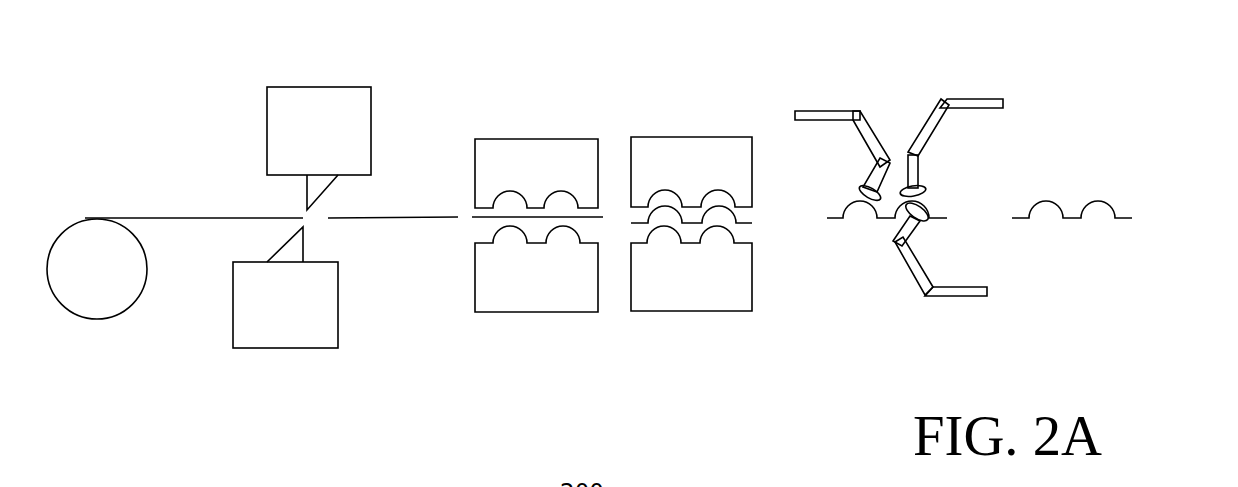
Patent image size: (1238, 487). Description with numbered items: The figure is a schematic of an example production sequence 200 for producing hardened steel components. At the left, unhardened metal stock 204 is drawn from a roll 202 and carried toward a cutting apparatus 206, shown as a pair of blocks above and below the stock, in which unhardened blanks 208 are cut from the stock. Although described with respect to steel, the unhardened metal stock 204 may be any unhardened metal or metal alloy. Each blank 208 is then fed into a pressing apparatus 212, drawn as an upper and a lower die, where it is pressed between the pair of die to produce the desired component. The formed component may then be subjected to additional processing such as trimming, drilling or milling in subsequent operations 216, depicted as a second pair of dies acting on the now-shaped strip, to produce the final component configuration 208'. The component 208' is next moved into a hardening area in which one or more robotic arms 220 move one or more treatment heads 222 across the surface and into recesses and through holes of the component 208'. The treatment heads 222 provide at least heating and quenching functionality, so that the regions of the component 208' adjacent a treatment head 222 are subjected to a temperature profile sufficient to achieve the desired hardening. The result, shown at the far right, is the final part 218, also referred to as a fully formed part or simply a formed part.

The production sequence 200 is at (125, 66).
The roll 202 is at (102, 318).
The unhardened metal stock 204 is at (203, 218).
The cutting apparatus 206 is at (292, 337).
The unhardened blanks 208 is at (465, 149).
The pressing apparatus 212 is at (568, 293).
The subsequent operations 216 is at (707, 302).
The final component configuration 208' is at (887, 267).
The robotic arms 220 is at (813, 111).
The treatment heads 222 is at (923, 190).
The final part 218 is at (1090, 212).